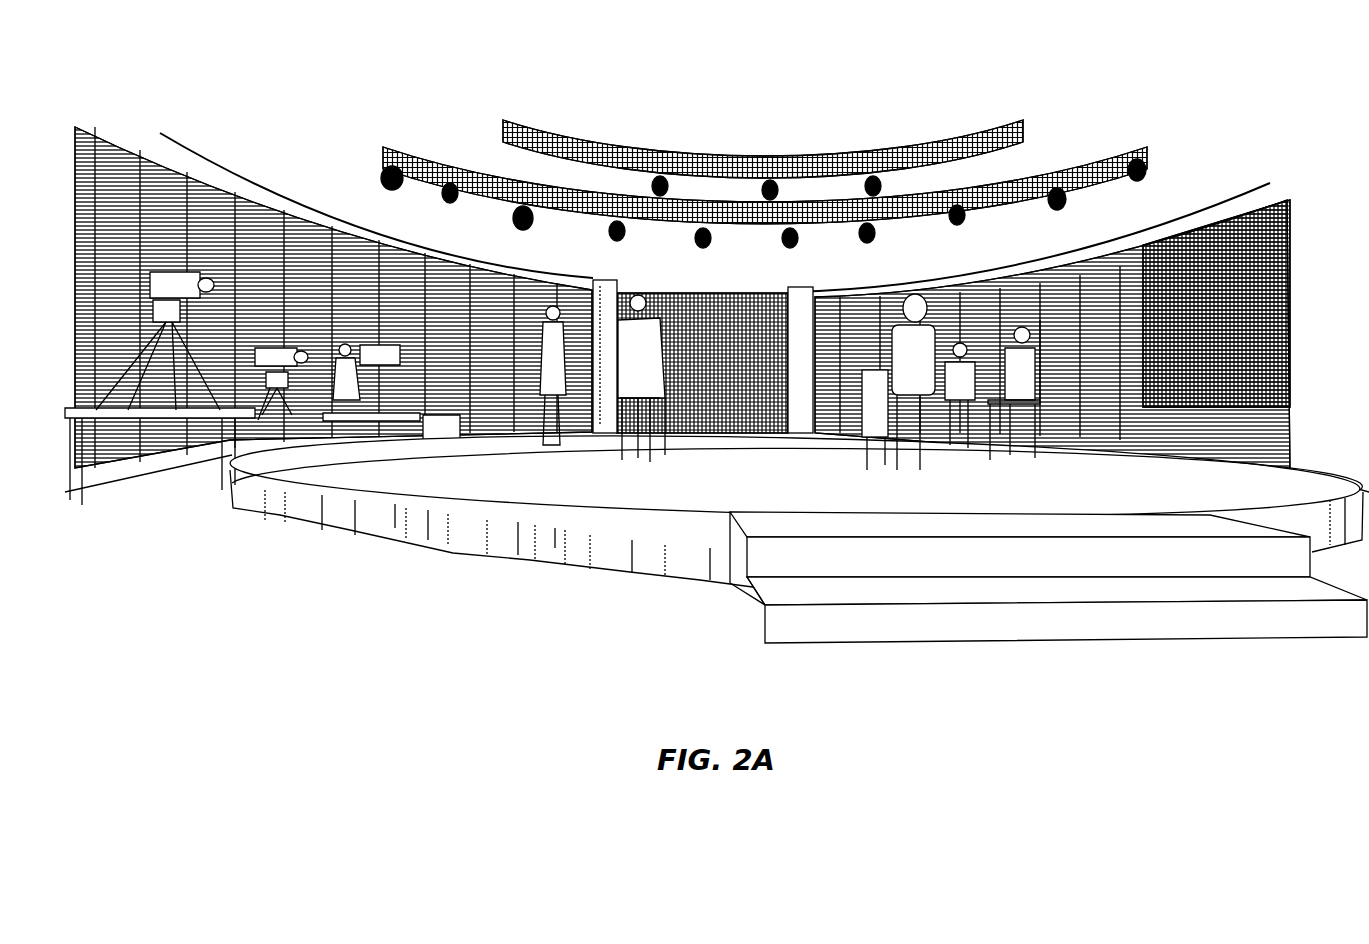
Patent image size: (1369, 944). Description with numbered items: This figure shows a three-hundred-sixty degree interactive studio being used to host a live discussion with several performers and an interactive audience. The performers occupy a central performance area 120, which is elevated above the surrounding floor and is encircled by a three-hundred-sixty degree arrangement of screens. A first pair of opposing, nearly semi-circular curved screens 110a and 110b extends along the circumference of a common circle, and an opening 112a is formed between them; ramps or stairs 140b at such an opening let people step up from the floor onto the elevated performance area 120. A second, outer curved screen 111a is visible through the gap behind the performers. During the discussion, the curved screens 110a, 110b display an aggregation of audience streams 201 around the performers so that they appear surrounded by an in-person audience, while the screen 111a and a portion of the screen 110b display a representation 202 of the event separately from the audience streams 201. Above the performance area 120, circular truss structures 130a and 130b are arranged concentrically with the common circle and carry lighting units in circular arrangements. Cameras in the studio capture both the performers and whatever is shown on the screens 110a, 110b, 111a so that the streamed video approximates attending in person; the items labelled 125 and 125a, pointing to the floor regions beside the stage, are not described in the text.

The curved screen 110a is at (300, 210).
The curved screen 110b is at (1182, 222).
The opening 112a is at (600, 280).
The representation 202 is at (686, 292).
The truss structure 130a is at (752, 200).
The truss structure 130b is at (813, 153).
The curved screen 111a is at (762, 287).
The audience streams 201 is at (208, 290).
The performance area 120 is at (772, 477).
The studio floor 125 is at (292, 592).
The camera floor area 125a is at (152, 507).
The stairs 140b is at (1183, 589).